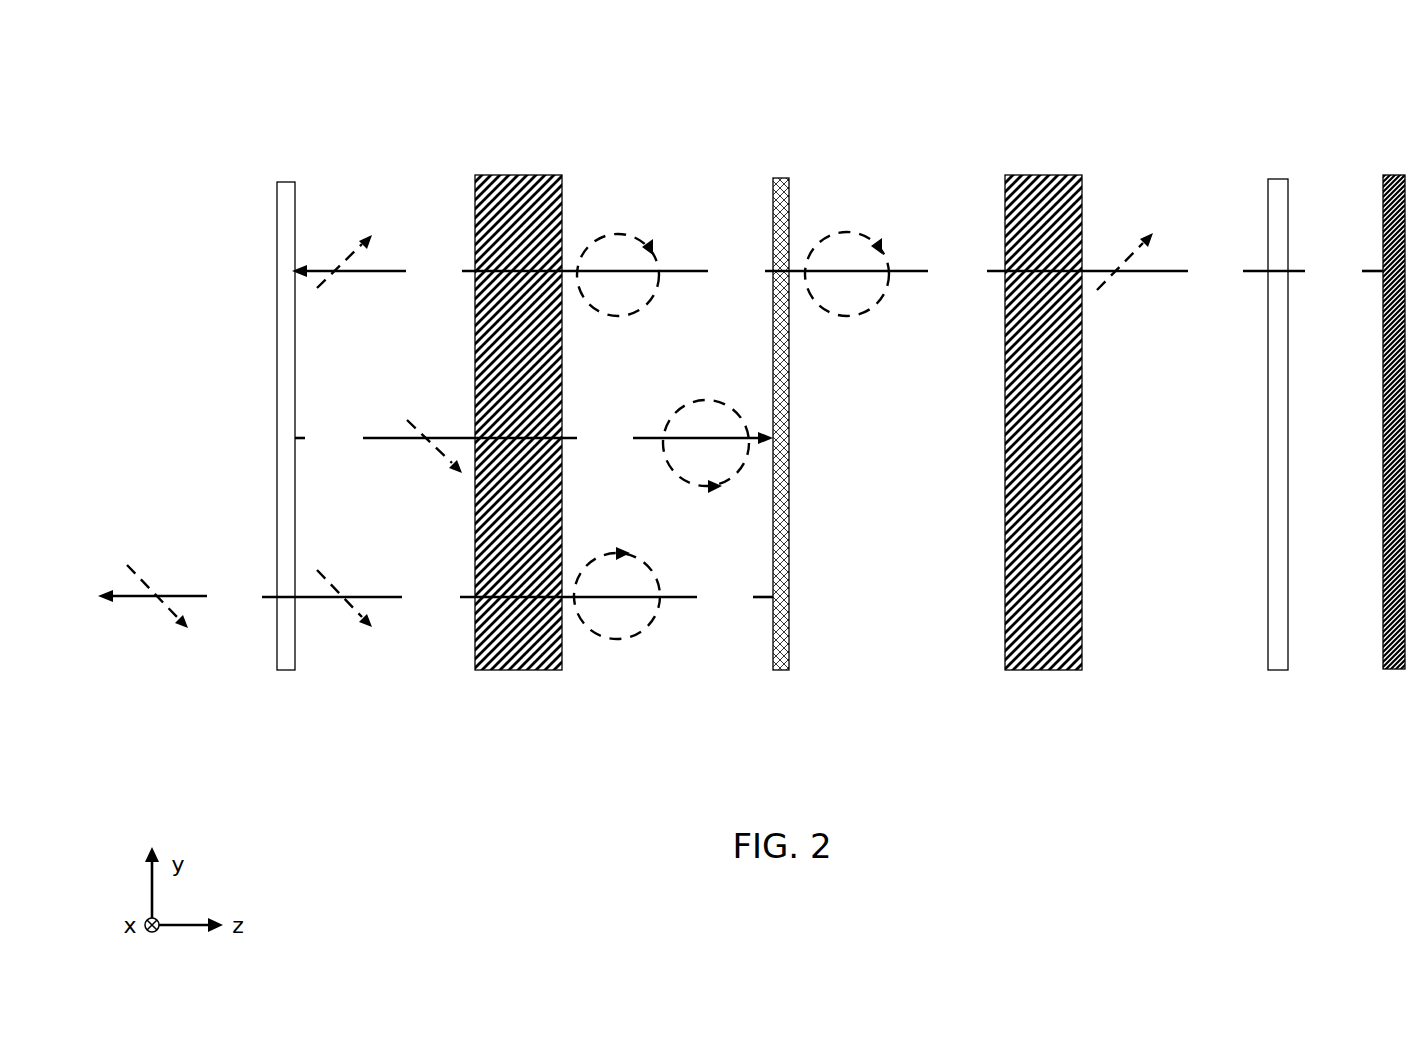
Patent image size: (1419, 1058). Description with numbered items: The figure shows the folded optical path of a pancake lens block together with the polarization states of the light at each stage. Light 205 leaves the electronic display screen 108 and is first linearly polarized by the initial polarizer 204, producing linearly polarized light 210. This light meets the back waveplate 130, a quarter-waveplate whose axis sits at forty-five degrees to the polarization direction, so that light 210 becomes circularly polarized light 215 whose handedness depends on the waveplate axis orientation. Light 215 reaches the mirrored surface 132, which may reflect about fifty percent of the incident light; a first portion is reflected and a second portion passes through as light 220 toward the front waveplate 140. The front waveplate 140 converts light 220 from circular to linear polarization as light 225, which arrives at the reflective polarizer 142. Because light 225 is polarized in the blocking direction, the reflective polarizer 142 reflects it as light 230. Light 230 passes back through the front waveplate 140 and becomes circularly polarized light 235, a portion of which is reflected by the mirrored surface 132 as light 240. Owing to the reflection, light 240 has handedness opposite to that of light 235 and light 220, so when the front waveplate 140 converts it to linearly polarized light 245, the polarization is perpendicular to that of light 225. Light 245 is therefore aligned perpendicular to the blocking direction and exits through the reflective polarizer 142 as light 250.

The reflective polarizer 142 is at (276, 203).
The front waveplate 140 is at (505, 175).
The mirrored surface 132 is at (773, 225).
The back waveplate 130 is at (1030, 175).
The initial polarizer 204 is at (1267, 189).
The electronic display screen 108 is at (1383, 205).
The light 205 is at (1313, 271).
The linearly polarized light 210 is at (1109, 251).
The circularly polarized light 215 is at (869, 266).
The transmitted light 220 is at (608, 268).
The linearly polarized light 225 is at (371, 253).
The reflected light 230 is at (436, 438).
The circularly polarized light 235 is at (680, 438).
The reflected circularly polarized light 240 is at (740, 597).
The linearly polarized light 245 is at (479, 587).
The transmitted light 250 is at (175, 588).